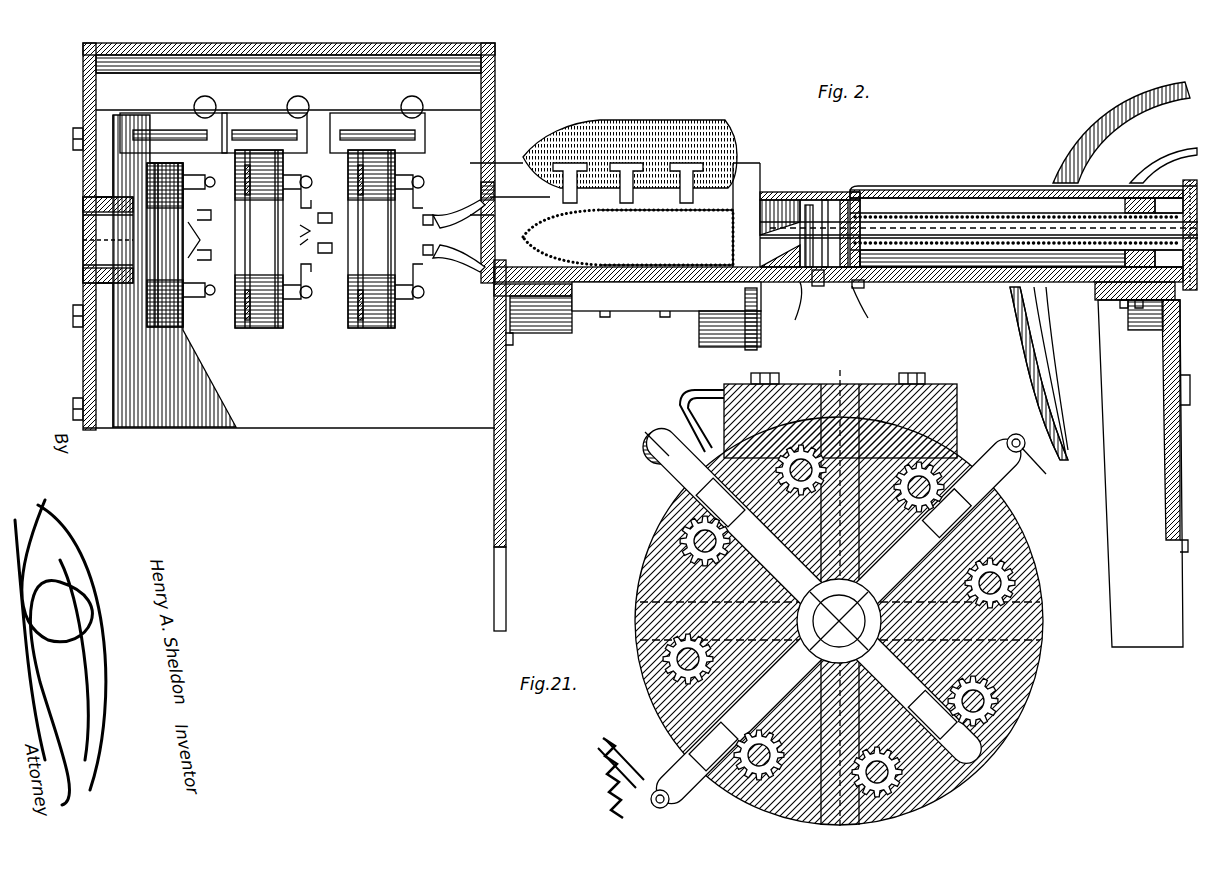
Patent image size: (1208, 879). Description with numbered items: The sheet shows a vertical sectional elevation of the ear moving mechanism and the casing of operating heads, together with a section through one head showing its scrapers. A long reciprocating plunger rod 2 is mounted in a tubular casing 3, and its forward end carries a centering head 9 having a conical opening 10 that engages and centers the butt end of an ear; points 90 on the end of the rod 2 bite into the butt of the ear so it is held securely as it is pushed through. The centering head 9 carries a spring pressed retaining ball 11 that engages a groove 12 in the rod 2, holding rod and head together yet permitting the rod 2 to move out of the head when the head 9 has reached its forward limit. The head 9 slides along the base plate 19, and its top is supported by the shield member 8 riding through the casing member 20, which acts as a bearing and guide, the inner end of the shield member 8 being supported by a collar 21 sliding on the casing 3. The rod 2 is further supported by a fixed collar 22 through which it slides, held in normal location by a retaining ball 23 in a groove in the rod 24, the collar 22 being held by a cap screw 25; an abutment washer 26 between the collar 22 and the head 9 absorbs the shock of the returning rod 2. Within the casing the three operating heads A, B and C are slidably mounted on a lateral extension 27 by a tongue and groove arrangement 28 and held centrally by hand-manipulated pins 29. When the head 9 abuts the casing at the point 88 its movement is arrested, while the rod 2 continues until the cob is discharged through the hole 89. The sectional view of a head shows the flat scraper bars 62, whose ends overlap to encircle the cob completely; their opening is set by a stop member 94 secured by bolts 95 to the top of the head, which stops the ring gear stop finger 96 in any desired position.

In FIG. 2, the reciprocating plunger rod 2 is at (972, 225).
In FIG. 2, the tubular casing 3 is at (1015, 215).
In FIG. 2, the shield member 8 is at (905, 198).
In FIG. 2, the centering head 9 is at (795, 200).
In FIG. 2, the conical opening 10 is at (767, 230).
In FIG. 2, the spring pressed retaining ball 11 is at (818, 200).
In FIG. 2, the groove 12 is at (815, 284).
In FIG. 2, the base plate 19 is at (915, 282).
In FIG. 21, the base plate 19 is at (1012, 440).
In FIG. 2, the casing member 20 is at (862, 190).
In FIG. 21, the casing member 20 is at (852, 392).
In FIG. 2, the collar 21 is at (1134, 308).
In FIG. 2, the fixed collar 22 is at (992, 261).
In FIG. 2, the retaining ball 23 is at (850, 198).
In FIG. 2, the groove in the rod 24 is at (866, 312).
In FIG. 2, the cap screw 25 is at (860, 284).
In FIG. 2, the abutment washer 26 is at (804, 311).
In FIG. 2, the lateral extension 27 is at (220, 125).
In FIG. 2, the tongue and groove arrangement 28 is at (137, 130).
In FIG. 2, the pins 29 is at (207, 98).
In FIG. 21, the scraper bars 62 is at (842, 615).
In FIG. 2, the casing abutment point 88 is at (500, 168).
In FIG. 2, the hole 89 is at (100, 243).
In FIG. 2, the points 90 is at (780, 233).
In FIG. 21, the stop member 94 is at (692, 398).
In FIG. 21, the bolts 95 is at (770, 373).
In FIG. 21, the ring gear stop finger 96 is at (668, 470).
In FIG. 2, the cutter head A is at (375, 328).
In FIG. 2, the head B is at (262, 328).
In FIG. 2, the head C is at (170, 323).